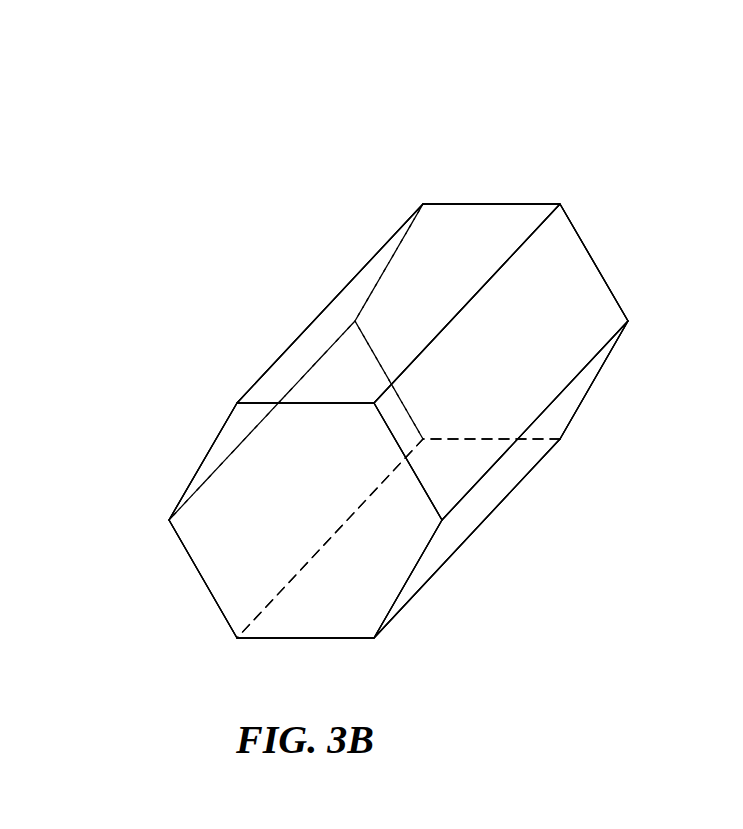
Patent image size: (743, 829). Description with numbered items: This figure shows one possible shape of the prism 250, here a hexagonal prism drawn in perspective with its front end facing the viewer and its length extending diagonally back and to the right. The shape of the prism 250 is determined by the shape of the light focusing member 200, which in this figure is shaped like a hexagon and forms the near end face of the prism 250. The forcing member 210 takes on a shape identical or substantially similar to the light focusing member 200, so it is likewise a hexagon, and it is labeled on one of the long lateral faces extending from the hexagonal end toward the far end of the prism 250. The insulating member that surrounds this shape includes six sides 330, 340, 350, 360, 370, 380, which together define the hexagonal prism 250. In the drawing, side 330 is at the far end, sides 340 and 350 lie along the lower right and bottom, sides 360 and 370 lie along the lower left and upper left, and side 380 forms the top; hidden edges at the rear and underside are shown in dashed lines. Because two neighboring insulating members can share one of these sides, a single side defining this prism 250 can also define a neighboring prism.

The prism 250 is at (440, 358).
The light focusing member 200 is at (322, 531).
The forcing member 210 is at (474, 334).
The side 330 is at (577, 282).
The side 340 is at (560, 412).
The side 350 is at (327, 588).
The side 360 is at (223, 572).
The side 370 is at (298, 367).
The side 380 is at (487, 215).